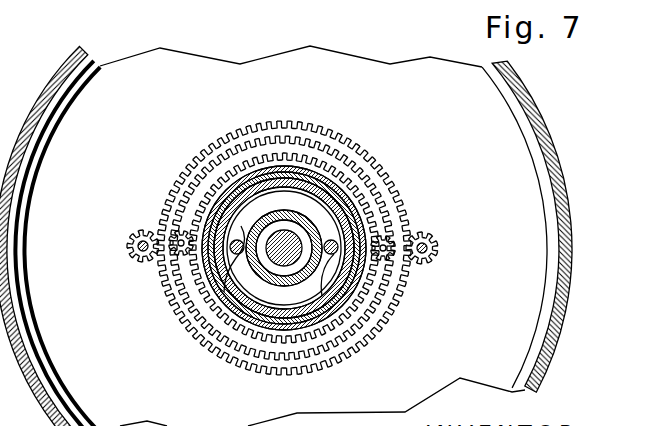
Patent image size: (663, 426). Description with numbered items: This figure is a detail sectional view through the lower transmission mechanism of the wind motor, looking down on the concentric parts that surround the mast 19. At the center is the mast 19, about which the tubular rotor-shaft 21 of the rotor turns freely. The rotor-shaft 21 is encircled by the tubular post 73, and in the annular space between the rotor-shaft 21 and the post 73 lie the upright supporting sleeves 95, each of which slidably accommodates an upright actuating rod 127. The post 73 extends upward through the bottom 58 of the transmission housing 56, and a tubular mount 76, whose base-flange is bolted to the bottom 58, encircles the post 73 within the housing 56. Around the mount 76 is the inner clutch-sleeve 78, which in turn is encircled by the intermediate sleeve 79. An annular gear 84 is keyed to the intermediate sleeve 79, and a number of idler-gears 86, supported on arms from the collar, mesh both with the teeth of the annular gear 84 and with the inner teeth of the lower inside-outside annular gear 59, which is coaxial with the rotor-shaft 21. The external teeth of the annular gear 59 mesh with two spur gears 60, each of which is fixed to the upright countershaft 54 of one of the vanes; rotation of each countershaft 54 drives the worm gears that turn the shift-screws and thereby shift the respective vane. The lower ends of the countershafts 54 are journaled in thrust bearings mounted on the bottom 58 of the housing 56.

The mast 19 is at (291, 240).
The rotor-shaft 21 is at (247, 298).
The upright countershaft 54 is at (438, 247).
The transmission housing 56 is at (518, 88).
The bottom of transmission housing 58 is at (525, 180).
The lower inside-outside annular gear 59 is at (330, 140).
The spur gear 60 is at (433, 259).
The tubular post 73 is at (338, 208).
The tubular mount 76 is at (298, 172).
The inner clutch-sleeve 78 is at (268, 178).
The intermediate sleeve 79 is at (238, 185).
The annular gear 84 is at (262, 280).
The idler-gear 86 is at (386, 236).
The upright supporting sleeve 95 is at (330, 313).
The upright actuating rod 127 is at (213, 195).